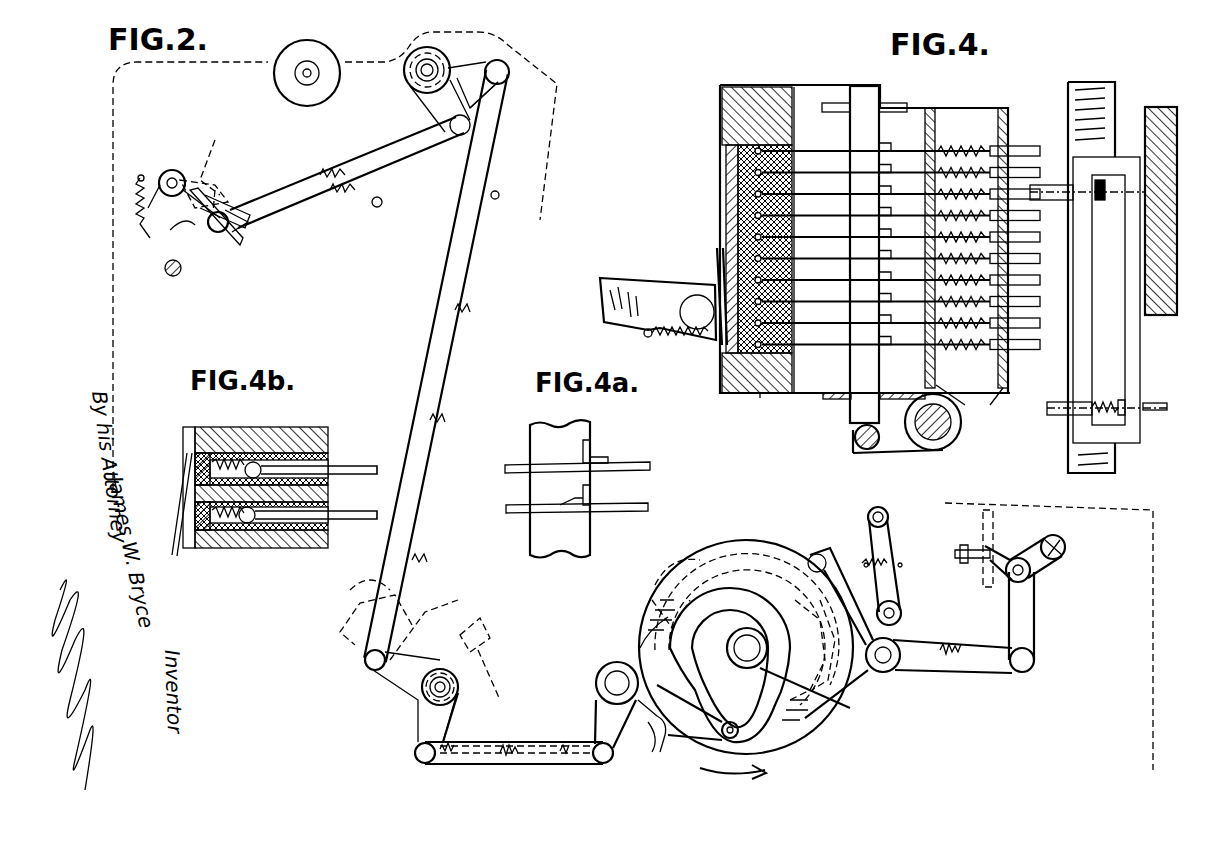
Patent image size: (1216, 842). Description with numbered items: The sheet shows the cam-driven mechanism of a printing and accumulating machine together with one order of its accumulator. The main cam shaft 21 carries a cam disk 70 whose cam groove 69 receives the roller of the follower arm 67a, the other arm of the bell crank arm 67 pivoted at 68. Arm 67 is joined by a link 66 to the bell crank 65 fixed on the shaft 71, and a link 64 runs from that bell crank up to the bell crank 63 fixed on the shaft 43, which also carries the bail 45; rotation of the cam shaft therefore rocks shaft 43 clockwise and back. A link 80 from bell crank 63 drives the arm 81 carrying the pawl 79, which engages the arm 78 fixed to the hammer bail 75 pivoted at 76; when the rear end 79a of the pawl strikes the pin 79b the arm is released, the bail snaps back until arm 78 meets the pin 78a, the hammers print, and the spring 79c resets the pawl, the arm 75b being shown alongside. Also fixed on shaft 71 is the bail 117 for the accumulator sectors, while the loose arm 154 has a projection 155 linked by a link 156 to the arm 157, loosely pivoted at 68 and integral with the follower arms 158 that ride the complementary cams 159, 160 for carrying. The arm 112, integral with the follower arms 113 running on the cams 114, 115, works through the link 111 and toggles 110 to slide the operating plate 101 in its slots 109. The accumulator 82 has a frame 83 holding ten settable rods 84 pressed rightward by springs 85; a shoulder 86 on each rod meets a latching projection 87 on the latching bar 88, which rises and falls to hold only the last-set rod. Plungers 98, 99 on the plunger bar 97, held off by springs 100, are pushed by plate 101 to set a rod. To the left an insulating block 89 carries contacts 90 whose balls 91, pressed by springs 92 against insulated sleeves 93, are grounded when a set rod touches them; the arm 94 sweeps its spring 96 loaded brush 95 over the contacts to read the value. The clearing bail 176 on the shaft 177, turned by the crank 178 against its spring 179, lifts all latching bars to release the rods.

In FIG. 2, the main cam shaft 21 is at (738, 652).
In FIG. 2, the shaft 43 is at (418, 62).
In FIG. 2, the bail 45 is at (488, 96).
In FIG. 2, the bell crank 63 is at (472, 64).
In FIG. 2, the link 64 is at (440, 387).
In FIG. 2, the bell crank 65 is at (409, 696).
In FIG. 2, the link 66 is at (517, 765).
In FIG. 2, the arm 67 is at (600, 710).
In FIG. 2, the cam follower arm 67a is at (692, 742).
In FIG. 2, the pivot 68 is at (608, 678).
In FIG. 2, the cam groove 69 is at (858, 714).
In FIG. 2, the cam disk 70 is at (820, 747).
In FIG. 2, the shaft 71 is at (447, 687).
In FIG. 2, the bail 75 is at (213, 166).
In FIG. 2, the lever arm 75b is at (248, 222).
In FIG. 2, the pivot 76 is at (177, 178).
In FIG. 2, the arm 78 is at (172, 228).
In FIG. 2, the pin 78a is at (222, 185).
In FIG. 2, the pawl 79 is at (205, 232).
In FIG. 2, the rear end of pawl 79a is at (238, 240).
In FIG. 2, the pin 79b is at (176, 277).
In FIG. 2, the spring 79c is at (180, 233).
In FIG. 2, the link 80 is at (311, 172).
In FIG. 2, the arm 81 is at (216, 208).
In FIG. 4, the accumulator 82 is at (770, 396).
In FIG. 4, the frame 83 is at (969, 400).
In FIG. 4, the settable rod 84 is at (912, 148).
In FIG. 4b, the settable rod 84 is at (358, 476).
In FIG. 4a, the settable rod 84 is at (640, 492).
In FIG. 4, the spring 85 is at (952, 143).
In FIG. 4, the shoulder 86 is at (866, 140).
In FIG. 4a, the shoulder 86 is at (610, 460).
In FIG. 4, the latching projection 87 is at (880, 150).
In FIG. 4a, the latching projection 87 is at (592, 455).
In FIG. 4, the latching bar 88 is at (850, 183).
In FIG. 4a, the latching bar 88 is at (530, 496).
In FIG. 4, the insulating block 89 is at (748, 398).
In FIG. 4b, the insulating block 89 is at (306, 428).
In FIG. 4, the contact 90 is at (735, 352).
In FIG. 4b, the contact 90 is at (200, 465).
In FIG. 4, the ball 91 is at (795, 145).
In FIG. 4b, the ball 91 is at (262, 435).
In FIG. 4, the spring 92 is at (740, 155).
In FIG. 4b, the spring 92 is at (222, 433).
In FIG. 4, the insulated sleeve 93 is at (796, 166).
In FIG. 4b, the insulated sleeve 93 is at (330, 458).
In FIG. 4, the arm 94 is at (633, 295).
In FIG. 4, the brush 95 is at (718, 258).
In FIG. 4b, the brush 95 is at (176, 530).
In FIG. 4, the spring 96 is at (673, 338).
In FIG. 4, the plunger bar 97 is at (1072, 92).
In FIG. 4, the plunger 98 is at (1055, 185).
In FIG. 4, the plunger 99 is at (1054, 415).
In FIG. 4, the spring 100 is at (1100, 404).
In FIG. 2, the operating plate 101 is at (982, 528).
In FIG. 4, the operating plate 101 is at (1177, 250).
In FIG. 2, the slot 109 is at (965, 562).
In FIG. 2, the toggle 110 is at (1015, 556).
In FIG. 2, the link 111 is at (1036, 620).
In FIG. 2, the arm 112 is at (994, 668).
In FIG. 2, the cam follower arm 113 is at (822, 572).
In FIG. 2, the cam 114 is at (752, 545).
In FIG. 2, the cam 115 is at (782, 565).
In FIG. 2, the bail 117 is at (483, 651).
In FIG. 2, the arm 154 is at (399, 620).
In FIG. 2, the projection 155 is at (457, 724).
In FIG. 2, the link 156 is at (512, 730).
In FIG. 2, the arm 157 is at (637, 723).
In FIG. 2, the cam follower arm 158 is at (640, 650).
In FIG. 2, the cam 159 is at (655, 588).
In FIG. 2, the cam 160 is at (782, 560).
In FIG. 4, the bail 176 is at (856, 440).
In FIG. 2, the shaft 177 is at (903, 614).
In FIG. 4, the shaft 177 is at (940, 430).
In FIG. 2, the crank 178 is at (885, 515).
In FIG. 2, the spring 179 is at (893, 558).